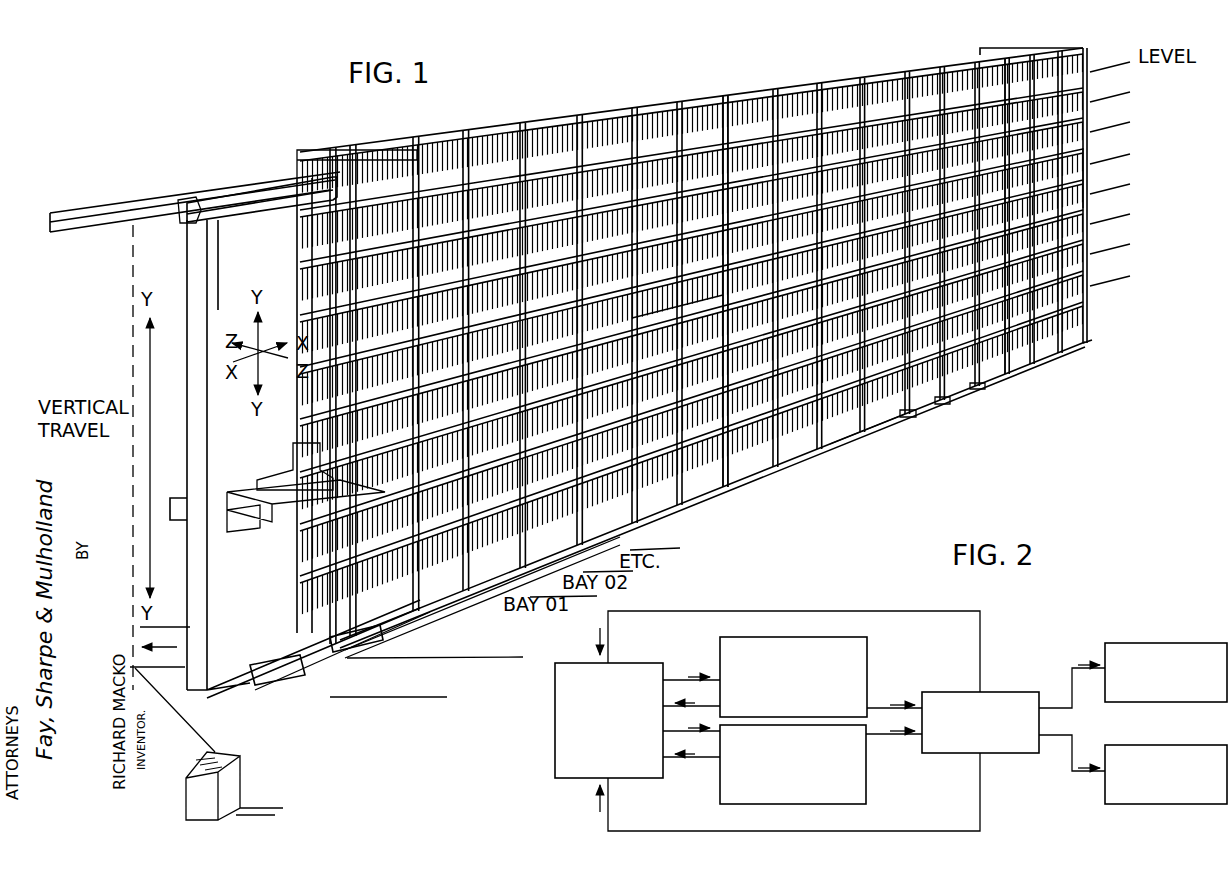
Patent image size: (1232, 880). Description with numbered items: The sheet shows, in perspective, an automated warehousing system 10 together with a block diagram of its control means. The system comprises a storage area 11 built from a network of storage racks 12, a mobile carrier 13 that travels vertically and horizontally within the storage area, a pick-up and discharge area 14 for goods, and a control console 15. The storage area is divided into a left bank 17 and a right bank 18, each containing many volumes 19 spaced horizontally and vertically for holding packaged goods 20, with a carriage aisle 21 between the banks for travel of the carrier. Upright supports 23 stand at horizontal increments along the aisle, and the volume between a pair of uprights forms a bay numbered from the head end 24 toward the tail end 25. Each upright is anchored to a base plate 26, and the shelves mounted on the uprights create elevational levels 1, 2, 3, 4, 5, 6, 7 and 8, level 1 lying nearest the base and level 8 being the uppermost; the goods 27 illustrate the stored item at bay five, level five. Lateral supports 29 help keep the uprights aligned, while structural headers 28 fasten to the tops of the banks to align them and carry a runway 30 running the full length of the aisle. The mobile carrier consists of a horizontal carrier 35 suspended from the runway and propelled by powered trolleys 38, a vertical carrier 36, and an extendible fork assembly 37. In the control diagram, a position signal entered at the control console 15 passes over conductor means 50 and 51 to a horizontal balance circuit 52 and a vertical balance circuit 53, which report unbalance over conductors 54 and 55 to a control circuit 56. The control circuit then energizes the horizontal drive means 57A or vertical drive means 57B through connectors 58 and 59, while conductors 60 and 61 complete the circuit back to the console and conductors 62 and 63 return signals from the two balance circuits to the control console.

In FIG. 1, the automated warehousing system 10 is at (580, 93).
In FIG. 1, the storage area 11 is at (1003, 387).
In FIG. 1, the storage racks 12 is at (912, 412).
In FIG. 1, the mobile carrier 13 is at (233, 182).
In FIG. 1, the pick-up and discharge area 14 is at (360, 676).
In FIG. 1, the control console 15 is at (240, 787).
In FIG. 2, the control console 15 is at (555, 770).
In FIG. 1, the left bank 17 is at (327, 168).
In FIG. 1, the right bank 18 is at (345, 667).
In FIG. 1, the volumes 19 is at (454, 597).
In FIG. 1, the packaged goods 20 is at (746, 463).
In FIG. 1, the carriage aisle 21 is at (370, 612).
In FIG. 1, the upright supports 23 is at (860, 441).
In FIG. 1, the head end 24 is at (503, 635).
In FIG. 1, the tail end 25 is at (1093, 342).
In FIG. 1, the base plate 26 is at (695, 513).
In FIG. 1, the goods stored at bay 05, level 5 27 is at (677, 301).
In FIG. 1, the structural headers 28 is at (822, 72).
In FIG. 1, the lateral supports 29 is at (1086, 148).
In FIG. 1, the runway 30 is at (62, 213).
In FIG. 1, the horizontal carrier 35 is at (192, 395).
In FIG. 1, the vertical carrier 36 is at (293, 470).
In FIG. 1, the extendible fork assembly 37 is at (257, 492).
In FIG. 1, the powered trolleys 38 is at (181, 200).
In FIG. 1, the level 1 is at (1130, 292).
In FIG. 1, the level 2 is at (1130, 260).
In FIG. 1, the level 3 is at (1130, 230).
In FIG. 1, the level 4 is at (1130, 200).
In FIG. 1, the level 5 is at (1130, 170).
In FIG. 1, the level 6 is at (1130, 138).
In FIG. 1, the level 7 is at (1130, 108).
In FIG. 1, the level 8 is at (1130, 78).
In FIG. 2, the conductor means 50 is at (672, 680).
In FIG. 2, the conductor means 51 is at (700, 731).
In FIG. 2, the horizontal balance circuit 52 is at (868, 652).
In FIG. 2, the vertical balance circuit 53 is at (867, 780).
In FIG. 2, the conductor 54 is at (880, 708).
In FIG. 2, the conductor 55 is at (880, 734).
In FIG. 2, the control circuit 56 is at (1000, 692).
In FIG. 2, the horizontal drive means 57A is at (1197, 636).
In FIG. 2, the vertical drive means 57B is at (1170, 804).
In FIG. 2, the connector 58 is at (1052, 708).
In FIG. 2, the connector 59 is at (1080, 771).
In FIG. 2, the conductor 60 is at (928, 611).
In FIG. 2, the conductor 61 is at (918, 831).
In FIG. 2, the conductor 62 is at (703, 706).
In FIG. 2, the conductor 63 is at (680, 757).